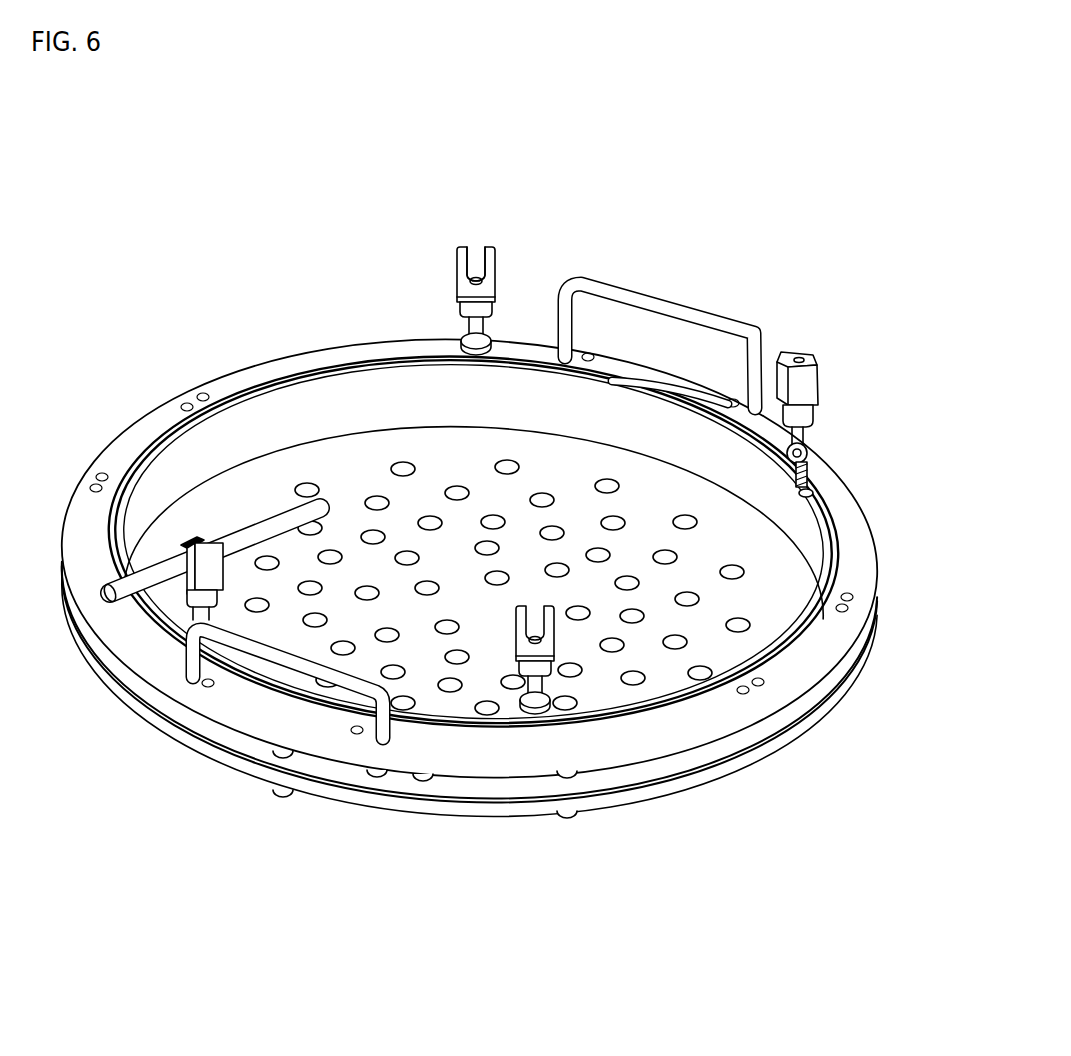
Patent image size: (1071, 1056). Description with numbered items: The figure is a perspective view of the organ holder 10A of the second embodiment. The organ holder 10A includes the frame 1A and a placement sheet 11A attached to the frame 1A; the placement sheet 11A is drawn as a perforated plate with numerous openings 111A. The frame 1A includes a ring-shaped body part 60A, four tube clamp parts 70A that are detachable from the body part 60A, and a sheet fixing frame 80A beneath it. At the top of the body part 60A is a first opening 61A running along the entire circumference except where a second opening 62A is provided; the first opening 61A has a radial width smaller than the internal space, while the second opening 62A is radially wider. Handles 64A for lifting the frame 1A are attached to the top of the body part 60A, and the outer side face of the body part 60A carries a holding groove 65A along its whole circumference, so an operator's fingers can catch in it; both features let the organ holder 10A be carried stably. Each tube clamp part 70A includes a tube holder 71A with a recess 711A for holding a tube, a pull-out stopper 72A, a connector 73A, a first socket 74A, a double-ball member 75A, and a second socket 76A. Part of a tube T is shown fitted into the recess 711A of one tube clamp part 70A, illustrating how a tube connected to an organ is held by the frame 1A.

The frame 1A is at (262, 292).
The organ holder 10A is at (612, 218).
The placement sheet 11A is at (360, 455).
The through holes 111A is at (694, 529).
The body part 60A is at (253, 432).
The first opening 61A is at (400, 360).
The second opening 62A is at (647, 385).
The handles 64A is at (722, 303).
The holding groove 65A is at (476, 786).
The tube clamp part 70A is at (477, 230).
The tube holder 71A is at (457, 272).
The recess 711A is at (534, 259).
The pull-out stopper 72A is at (812, 494).
The connector 73A is at (812, 476).
The first socket 74A is at (809, 455).
The double-ball member 75A is at (806, 441).
The second socket 76A is at (806, 416).
The sheet fixing frame 80A is at (320, 790).
The tube T is at (187, 527).